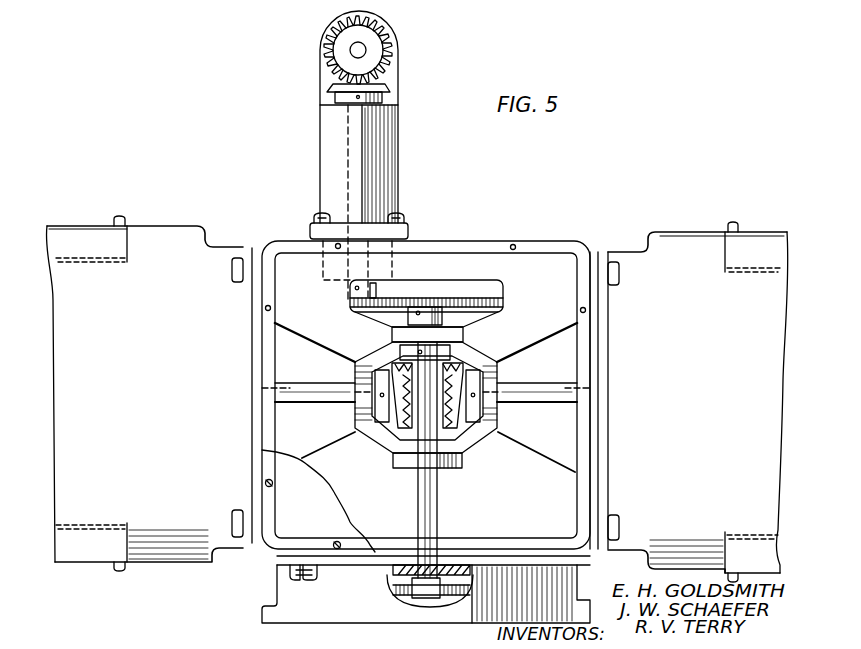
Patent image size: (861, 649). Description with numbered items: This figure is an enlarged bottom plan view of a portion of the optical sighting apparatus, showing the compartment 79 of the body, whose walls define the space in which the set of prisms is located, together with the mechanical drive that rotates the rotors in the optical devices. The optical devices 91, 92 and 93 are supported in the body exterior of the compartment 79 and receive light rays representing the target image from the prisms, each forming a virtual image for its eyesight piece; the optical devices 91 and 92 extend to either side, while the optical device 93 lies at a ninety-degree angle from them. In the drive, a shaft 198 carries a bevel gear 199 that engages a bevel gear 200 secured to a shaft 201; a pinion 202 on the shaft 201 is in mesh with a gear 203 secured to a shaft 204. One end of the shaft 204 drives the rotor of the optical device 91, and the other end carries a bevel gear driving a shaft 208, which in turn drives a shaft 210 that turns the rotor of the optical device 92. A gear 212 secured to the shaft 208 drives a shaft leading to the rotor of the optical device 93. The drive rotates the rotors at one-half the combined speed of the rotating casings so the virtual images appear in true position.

The compartment 79 is at (440, 241).
The optical device 91 is at (670, 231).
The optical device 92 is at (162, 225).
The optical device 93 is at (274, 592).
The shaft 198 is at (363, 46).
The bevel gear 199 is at (390, 50).
The bevel gear 200 is at (392, 84).
The shaft 201 is at (348, 140).
The pinion 202 is at (374, 301).
The gear 203 is at (440, 302).
The shaft 204 is at (322, 390).
The shaft 208 is at (437, 490).
The shaft 210 is at (520, 392).
The gear 212 is at (405, 592).